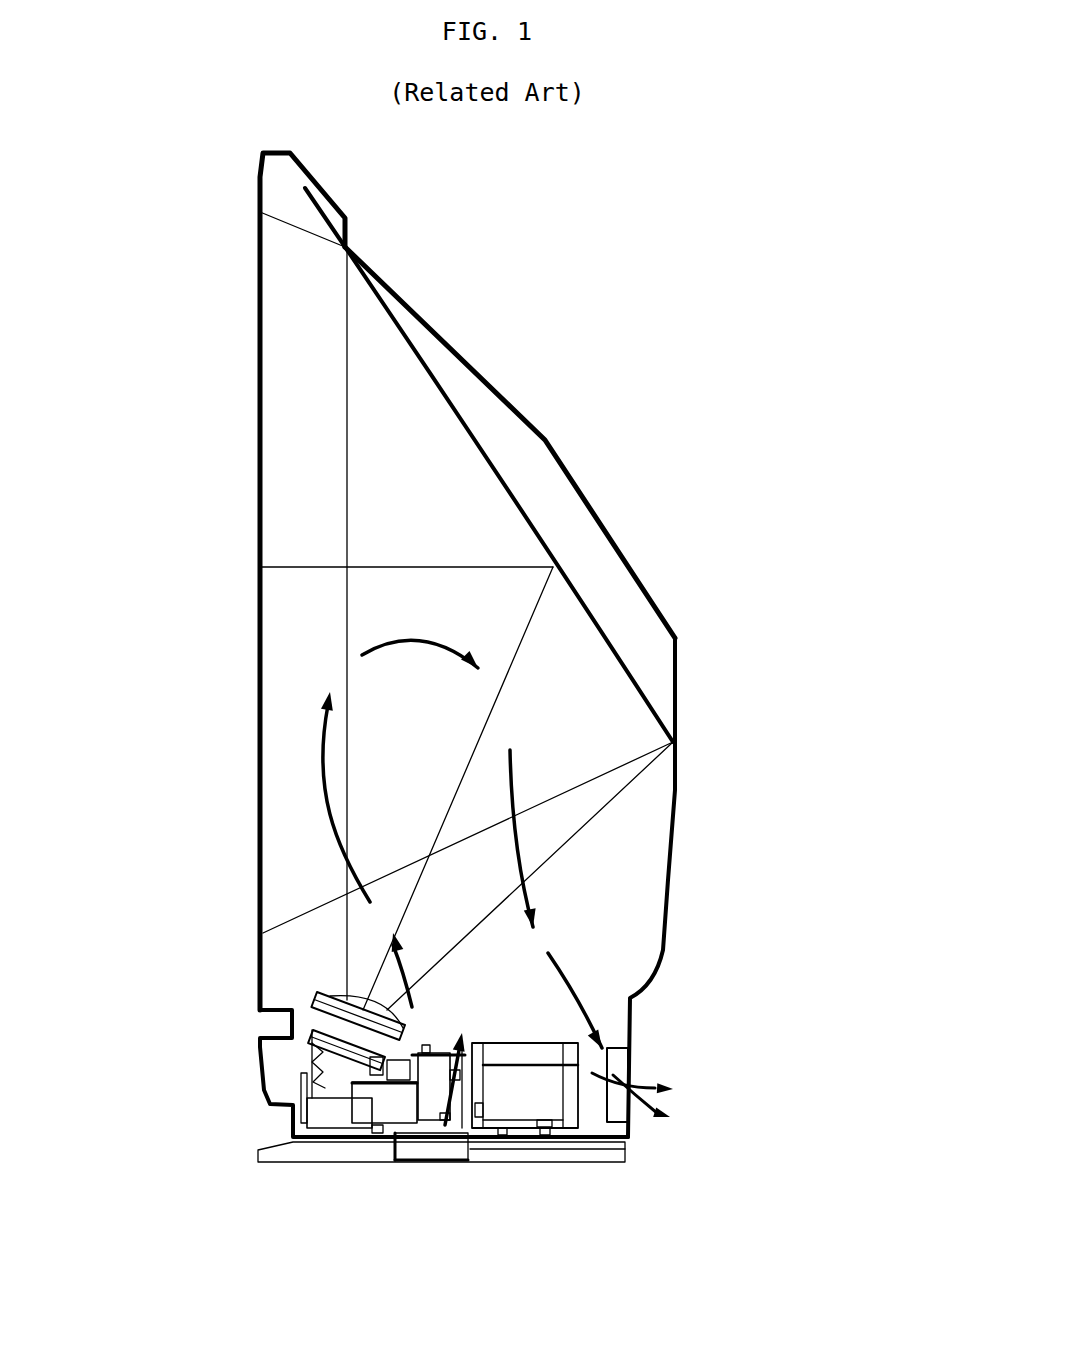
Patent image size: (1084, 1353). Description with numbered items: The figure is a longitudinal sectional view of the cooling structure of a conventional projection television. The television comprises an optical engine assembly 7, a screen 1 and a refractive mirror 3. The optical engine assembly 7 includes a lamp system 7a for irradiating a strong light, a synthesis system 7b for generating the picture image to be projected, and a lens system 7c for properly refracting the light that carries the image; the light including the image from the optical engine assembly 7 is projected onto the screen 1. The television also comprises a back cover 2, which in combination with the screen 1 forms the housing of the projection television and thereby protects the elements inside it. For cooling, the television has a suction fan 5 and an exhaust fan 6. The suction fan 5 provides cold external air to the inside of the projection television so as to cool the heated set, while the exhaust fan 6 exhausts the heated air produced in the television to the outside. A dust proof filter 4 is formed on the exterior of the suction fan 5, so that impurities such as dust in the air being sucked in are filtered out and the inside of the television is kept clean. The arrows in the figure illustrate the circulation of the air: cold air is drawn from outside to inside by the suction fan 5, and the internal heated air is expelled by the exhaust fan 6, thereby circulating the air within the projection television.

The screen 1 is at (262, 648).
The back cover 2 is at (547, 440).
The refractive mirror 3 is at (523, 507).
The dust proof filter 4 is at (437, 1165).
The suction fan 5 is at (408, 1160).
The exhaust fan 6 is at (627, 1062).
The optical engine assembly 7 is at (603, 992).
The lamp system 7a is at (523, 1053).
The synthesis system 7b is at (440, 1053).
The lens system 7c is at (400, 1020).